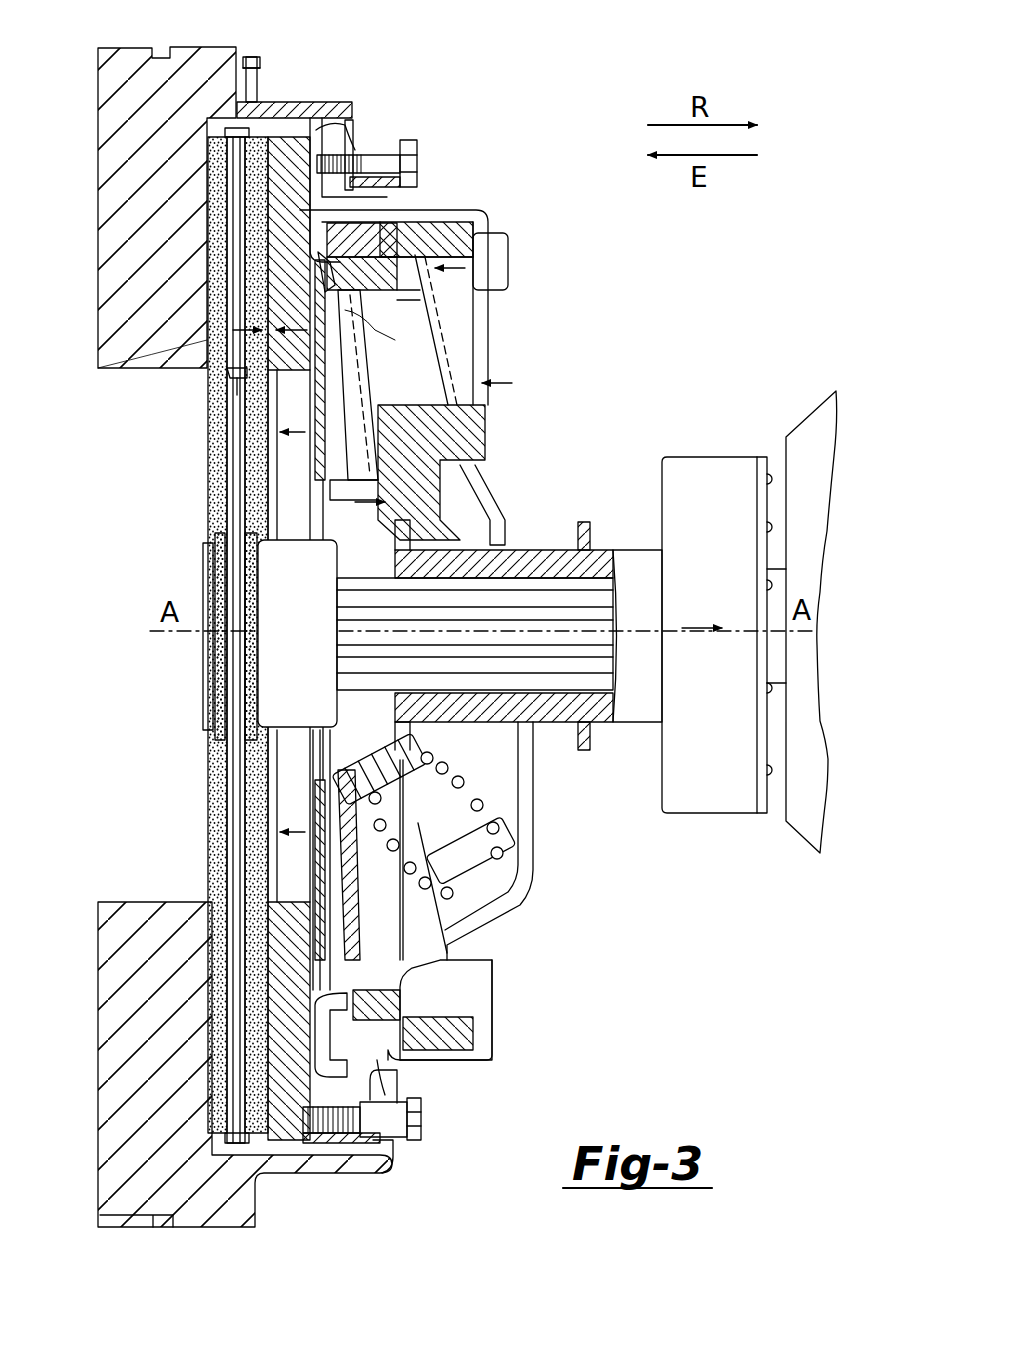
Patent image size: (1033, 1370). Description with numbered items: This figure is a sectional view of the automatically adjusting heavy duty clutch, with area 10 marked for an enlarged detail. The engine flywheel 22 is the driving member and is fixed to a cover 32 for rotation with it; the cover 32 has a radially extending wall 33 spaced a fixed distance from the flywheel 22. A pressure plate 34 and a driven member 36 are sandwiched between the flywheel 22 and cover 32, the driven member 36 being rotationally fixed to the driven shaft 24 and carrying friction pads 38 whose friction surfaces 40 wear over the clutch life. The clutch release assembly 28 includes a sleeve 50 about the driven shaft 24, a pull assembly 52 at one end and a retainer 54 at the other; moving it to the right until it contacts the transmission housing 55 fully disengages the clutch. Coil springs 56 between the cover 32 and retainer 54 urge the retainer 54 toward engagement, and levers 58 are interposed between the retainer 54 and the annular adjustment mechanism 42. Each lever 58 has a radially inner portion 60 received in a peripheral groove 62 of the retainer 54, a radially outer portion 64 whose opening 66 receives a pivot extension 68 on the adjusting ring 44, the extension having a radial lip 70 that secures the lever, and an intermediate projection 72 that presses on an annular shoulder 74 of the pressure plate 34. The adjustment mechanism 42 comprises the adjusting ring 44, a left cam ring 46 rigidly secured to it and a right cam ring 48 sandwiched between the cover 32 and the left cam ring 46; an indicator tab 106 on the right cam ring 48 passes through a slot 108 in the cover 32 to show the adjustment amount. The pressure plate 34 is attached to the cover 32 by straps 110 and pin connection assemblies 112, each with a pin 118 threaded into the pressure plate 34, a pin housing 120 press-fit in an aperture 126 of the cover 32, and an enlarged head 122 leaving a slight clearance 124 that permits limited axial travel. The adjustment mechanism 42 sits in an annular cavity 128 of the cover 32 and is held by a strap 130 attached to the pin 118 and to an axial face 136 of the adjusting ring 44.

The area 10 is at (490, 125).
The engine flywheel 22 is at (190, 90).
The driven shaft 24 is at (600, 722).
The clutch release assembly 28 is at (548, 540).
The cover 32 is at (488, 383).
The radially extending wall 33 is at (535, 835).
The pressure plate 34 is at (295, 140).
The driven member 36 is at (255, 100).
The friction pad 38 is at (218, 175).
The friction surface 40 is at (255, 225).
The adjustment mechanism 42 is at (470, 283).
The adjusting ring 44 is at (440, 1050).
The left cam ring 46 is at (470, 1060).
The right cam ring 48 is at (492, 1052).
The sleeve 50 is at (555, 722).
The pull assembly 52 is at (717, 495).
The retainer 54 is at (490, 445).
The transmission housing 55 is at (815, 448).
The coil springs 56 is at (522, 845).
The levers 58 is at (440, 345).
The radially inner portion 60 is at (300, 505).
The peripheral groove 62 is at (280, 520).
The radially outer portion 64 is at (390, 230).
The opening 66 is at (455, 228).
The pivot extension 68 is at (236, 270).
The radial lip 70 is at (318, 292).
The projection 72 is at (240, 385).
The annular shoulder 74 is at (233, 375).
The indicator tab 106 is at (500, 255).
The circumferentially extending slot 108 is at (478, 236).
The strap 110 is at (385, 1140).
The pin connection assembly 112 is at (418, 135).
The pin 118 is at (356, 160).
The pin housing 120 is at (370, 155).
The enlarged head 122 is at (418, 150).
The clearance 124 is at (353, 120).
The aperture 126 is at (385, 183).
The annular cavity 128 is at (480, 1028).
The strap 130 is at (328, 1143).
The axial face 136 is at (395, 300).